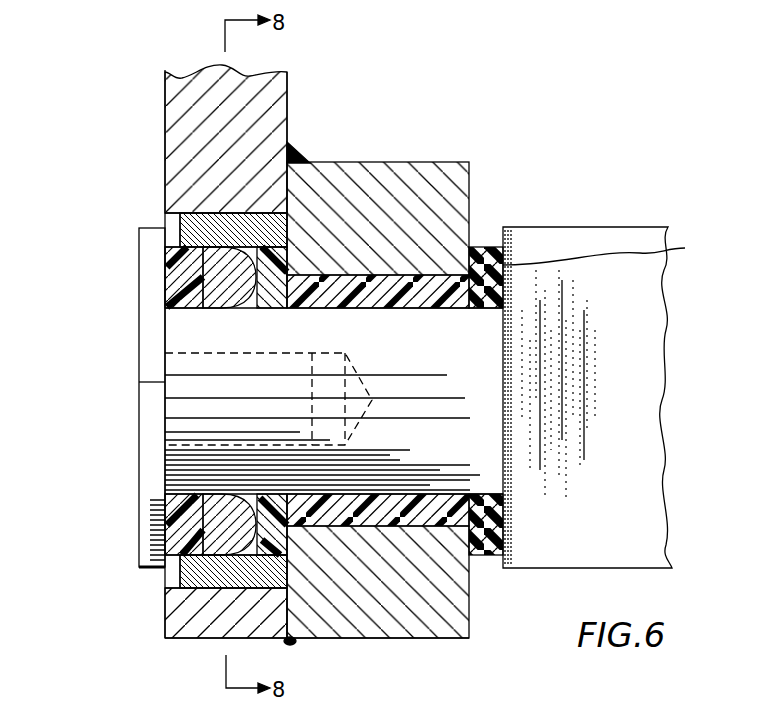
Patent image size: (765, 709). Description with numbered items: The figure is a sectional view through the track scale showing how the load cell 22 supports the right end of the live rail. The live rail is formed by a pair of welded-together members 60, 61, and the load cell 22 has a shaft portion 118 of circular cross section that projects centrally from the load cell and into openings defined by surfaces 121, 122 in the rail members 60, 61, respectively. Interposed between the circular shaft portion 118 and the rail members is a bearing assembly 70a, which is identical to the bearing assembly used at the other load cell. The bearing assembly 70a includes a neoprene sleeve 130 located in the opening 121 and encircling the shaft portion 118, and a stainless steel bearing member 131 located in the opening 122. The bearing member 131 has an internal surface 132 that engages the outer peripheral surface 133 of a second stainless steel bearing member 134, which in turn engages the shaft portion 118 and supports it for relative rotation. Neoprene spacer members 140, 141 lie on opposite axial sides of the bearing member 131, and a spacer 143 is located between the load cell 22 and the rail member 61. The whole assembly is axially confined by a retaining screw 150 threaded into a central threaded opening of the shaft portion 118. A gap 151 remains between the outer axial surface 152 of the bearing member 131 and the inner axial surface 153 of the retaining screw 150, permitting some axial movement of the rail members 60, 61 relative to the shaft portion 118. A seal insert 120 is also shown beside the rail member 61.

The rail member 60 is at (178, 125).
The rail member 61 is at (350, 188).
The opening surface 122 is at (245, 215).
The opening surface 121 is at (393, 280).
The upper seal insert 120 is at (495, 235).
The neoprene sleeve 130 is at (470, 560).
The load cell 22 is at (642, 214).
The spacer 143 is at (616, 252).
The shaft portion 118 is at (477, 367).
The outer axial surface 152 is at (165, 218).
The stainless steel bearing member 131 is at (190, 222).
The bearing assembly 70a is at (158, 264).
The inner axial surface 153 is at (170, 287).
The internal surface 132 is at (213, 308).
The retaining screw 150 is at (158, 440).
The neoprene spacer member 140 is at (177, 508).
The stainless steel bearing member 134 is at (210, 523).
The neoprene spacer member 141 is at (280, 542).
The gap 151 is at (173, 573).
The outer peripheral surface 133 is at (228, 560).